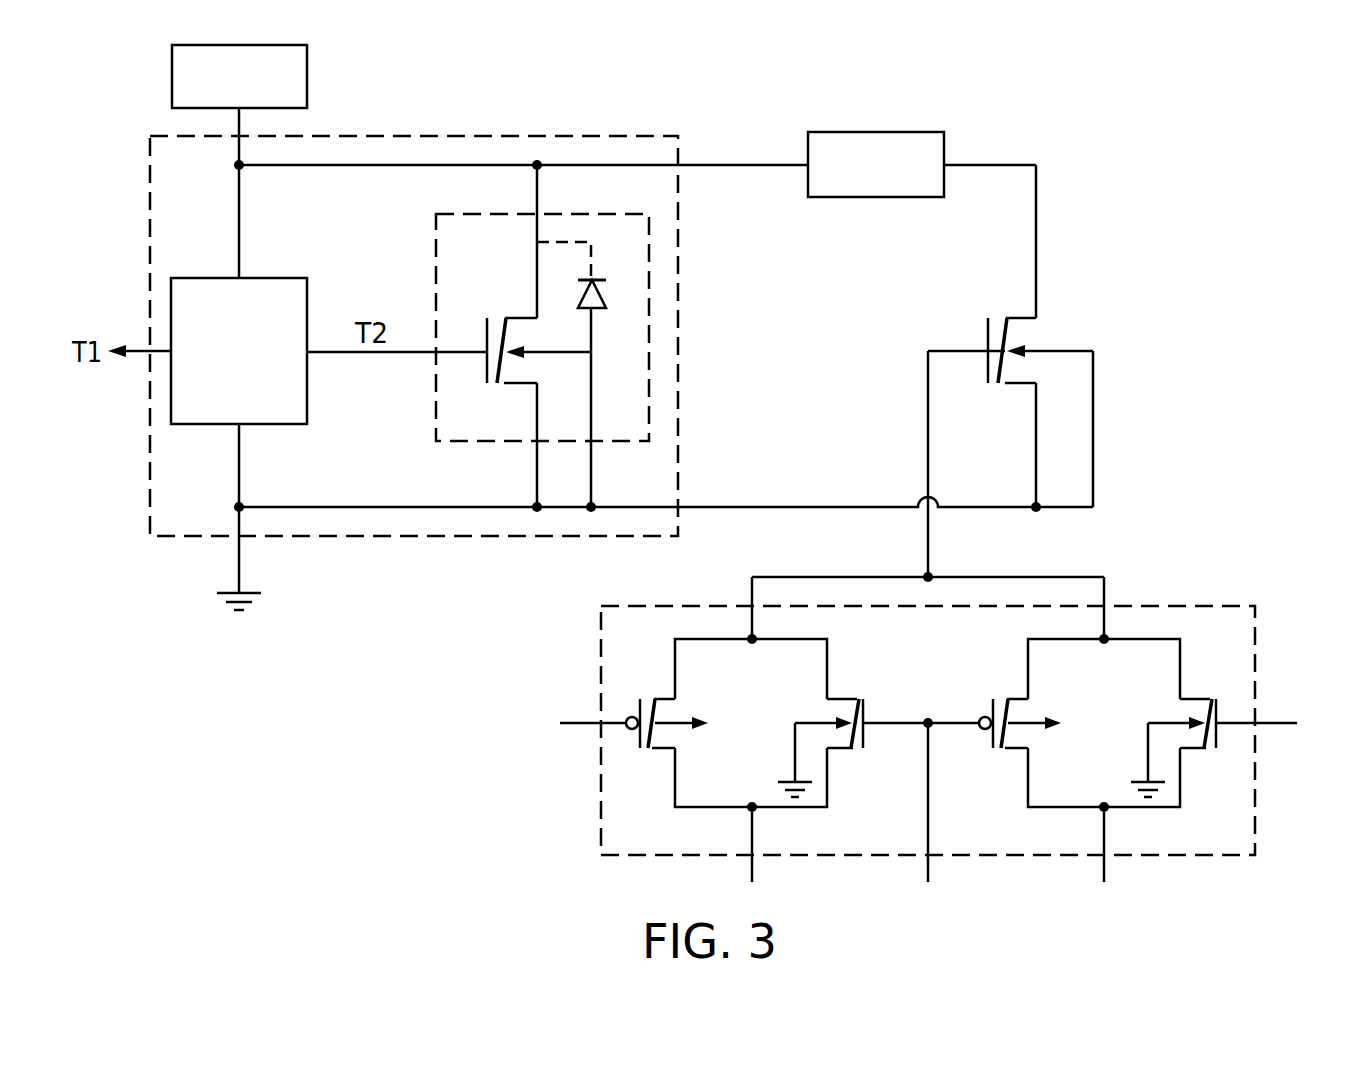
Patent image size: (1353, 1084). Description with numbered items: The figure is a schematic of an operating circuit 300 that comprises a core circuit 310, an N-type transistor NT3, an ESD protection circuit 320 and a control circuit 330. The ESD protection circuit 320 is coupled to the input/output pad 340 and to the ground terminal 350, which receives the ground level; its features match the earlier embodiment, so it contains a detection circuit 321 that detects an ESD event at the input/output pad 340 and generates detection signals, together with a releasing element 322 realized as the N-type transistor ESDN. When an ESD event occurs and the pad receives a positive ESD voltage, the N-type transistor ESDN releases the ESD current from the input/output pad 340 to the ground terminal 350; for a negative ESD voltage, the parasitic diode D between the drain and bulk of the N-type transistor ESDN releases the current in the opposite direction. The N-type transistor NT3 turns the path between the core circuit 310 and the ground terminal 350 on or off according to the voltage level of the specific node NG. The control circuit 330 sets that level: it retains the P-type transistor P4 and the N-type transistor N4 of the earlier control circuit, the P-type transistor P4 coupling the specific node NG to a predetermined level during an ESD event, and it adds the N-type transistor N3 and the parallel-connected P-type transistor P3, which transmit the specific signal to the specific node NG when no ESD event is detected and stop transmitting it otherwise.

The operating circuit 300 is at (1292, 86).
The core circuit 310 is at (915, 131).
The ESD protection circuit 320 is at (660, 132).
The detection circuit 321 is at (277, 278).
The ESD clamp unit 322 is at (502, 336).
The control circuit 330 is at (1218, 605).
The input/output pad 340 is at (261, 90).
The ground terminal 350 is at (258, 602).
The N-type transistor NT3 is at (1030, 336).
The specific node NG is at (932, 572).
The N-type transistor ESDN is at (518, 336).
The parasitic diode D is at (585, 374).
The P-type transistor P3 is at (634, 705).
The N-type transistor N3 is at (796, 735).
The P-type transistor P4 is at (1020, 705).
The transistor N4 is at (1149, 735).